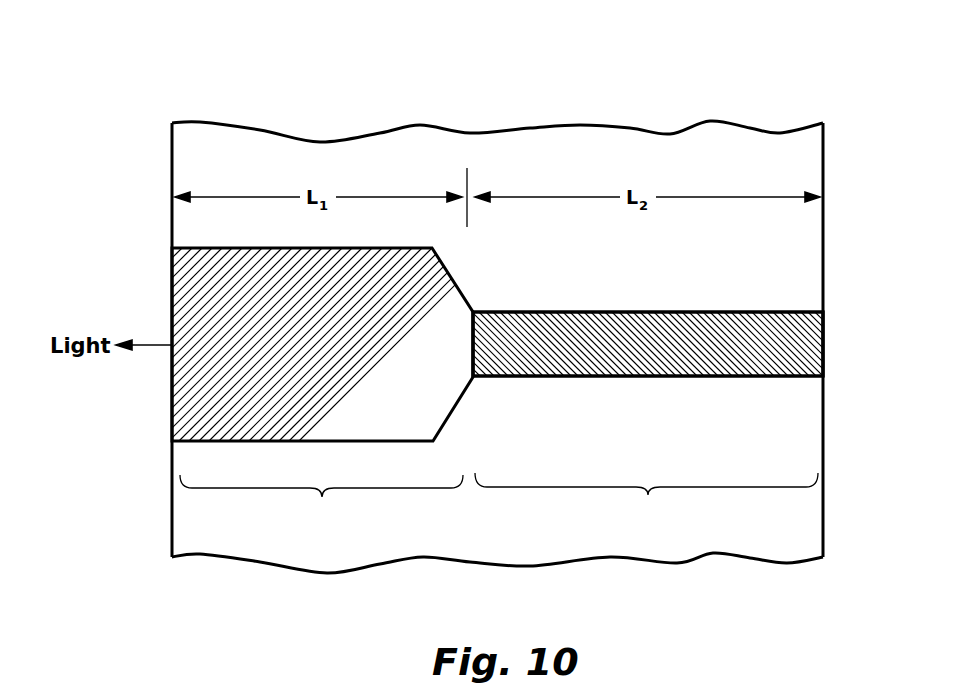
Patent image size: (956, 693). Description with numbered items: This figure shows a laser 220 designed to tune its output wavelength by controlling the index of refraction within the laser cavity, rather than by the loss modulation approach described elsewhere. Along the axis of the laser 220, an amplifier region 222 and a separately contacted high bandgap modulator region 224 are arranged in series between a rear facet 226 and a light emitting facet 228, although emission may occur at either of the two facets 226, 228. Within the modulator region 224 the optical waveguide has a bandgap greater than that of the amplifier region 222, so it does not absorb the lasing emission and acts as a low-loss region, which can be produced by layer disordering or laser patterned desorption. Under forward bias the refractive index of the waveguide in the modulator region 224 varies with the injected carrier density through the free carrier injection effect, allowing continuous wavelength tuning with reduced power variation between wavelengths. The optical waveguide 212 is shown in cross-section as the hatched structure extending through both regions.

The laser 220 is at (557, 75).
The thin waveguide core section 212 is at (620, 300).
The amplifier region 222 is at (246, 387).
The high bandgap modulator region 224 is at (647, 419).
The rear facet 226 is at (824, 337).
The light emitting facet 228 is at (172, 280).